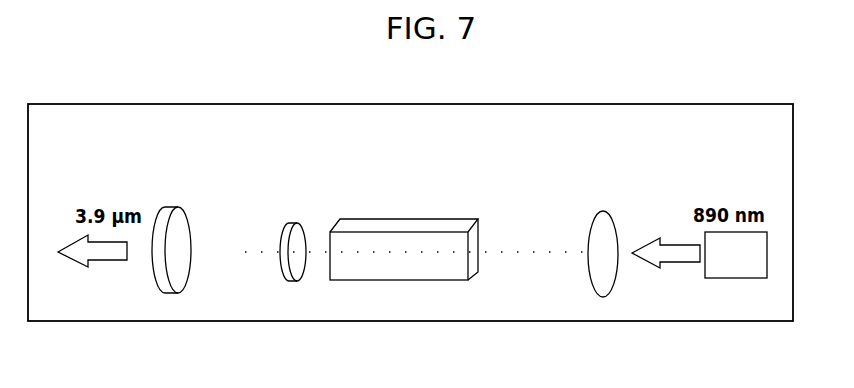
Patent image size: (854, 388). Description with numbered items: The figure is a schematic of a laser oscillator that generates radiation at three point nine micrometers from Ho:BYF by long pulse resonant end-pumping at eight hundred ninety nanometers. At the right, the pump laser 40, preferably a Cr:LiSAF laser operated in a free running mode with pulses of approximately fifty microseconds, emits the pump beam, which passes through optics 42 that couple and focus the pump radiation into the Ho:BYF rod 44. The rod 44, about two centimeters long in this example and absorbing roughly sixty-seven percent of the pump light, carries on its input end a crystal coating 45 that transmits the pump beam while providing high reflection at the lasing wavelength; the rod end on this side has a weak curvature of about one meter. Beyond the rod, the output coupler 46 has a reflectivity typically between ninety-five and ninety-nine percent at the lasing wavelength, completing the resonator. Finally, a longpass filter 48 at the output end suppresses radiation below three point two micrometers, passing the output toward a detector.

The pump laser 40 is at (725, 267).
The optics 42 is at (628, 223).
The Ho:BYF rod 44 is at (404, 205).
The Ho:BYF crystal coating 45 is at (509, 223).
The output coupler 46 is at (315, 210).
The longpass filter 48 is at (196, 213).